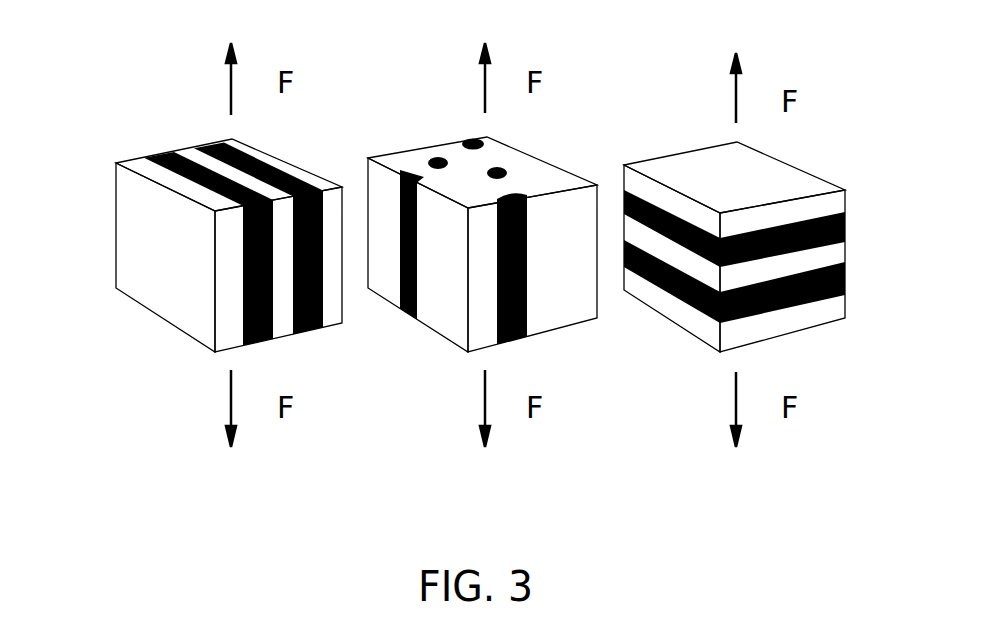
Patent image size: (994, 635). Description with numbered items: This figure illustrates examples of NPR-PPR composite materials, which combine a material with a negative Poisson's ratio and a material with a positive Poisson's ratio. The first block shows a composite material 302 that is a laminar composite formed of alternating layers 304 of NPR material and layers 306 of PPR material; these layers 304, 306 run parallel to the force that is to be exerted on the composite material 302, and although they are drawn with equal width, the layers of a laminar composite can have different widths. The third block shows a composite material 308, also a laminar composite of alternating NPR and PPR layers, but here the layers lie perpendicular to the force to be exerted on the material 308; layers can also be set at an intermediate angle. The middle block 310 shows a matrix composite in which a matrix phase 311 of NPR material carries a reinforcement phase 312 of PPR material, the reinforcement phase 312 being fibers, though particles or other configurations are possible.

The NPR-PPR composite material 302 is at (210, 243).
The layers of NPR material 304 is at (313, 332).
The layers of PPR material 306 is at (137, 160).
The NPR-PPR composite material 308 is at (877, 313).
The second composite block 310 is at (508, 241).
The matrix phase 311 is at (415, 162).
The reinforcement phase 312 is at (507, 171).